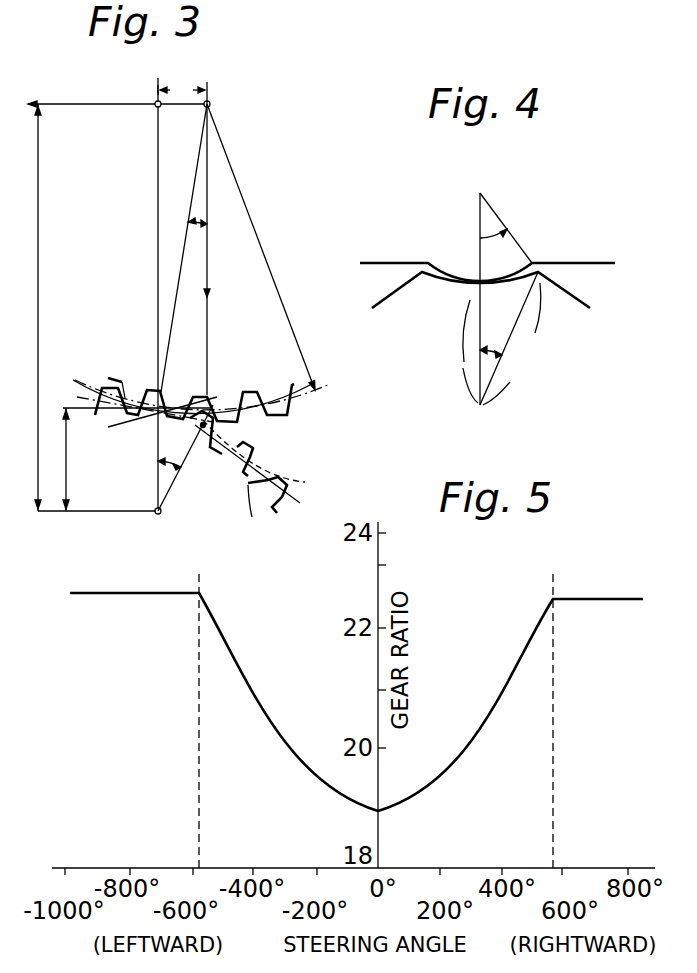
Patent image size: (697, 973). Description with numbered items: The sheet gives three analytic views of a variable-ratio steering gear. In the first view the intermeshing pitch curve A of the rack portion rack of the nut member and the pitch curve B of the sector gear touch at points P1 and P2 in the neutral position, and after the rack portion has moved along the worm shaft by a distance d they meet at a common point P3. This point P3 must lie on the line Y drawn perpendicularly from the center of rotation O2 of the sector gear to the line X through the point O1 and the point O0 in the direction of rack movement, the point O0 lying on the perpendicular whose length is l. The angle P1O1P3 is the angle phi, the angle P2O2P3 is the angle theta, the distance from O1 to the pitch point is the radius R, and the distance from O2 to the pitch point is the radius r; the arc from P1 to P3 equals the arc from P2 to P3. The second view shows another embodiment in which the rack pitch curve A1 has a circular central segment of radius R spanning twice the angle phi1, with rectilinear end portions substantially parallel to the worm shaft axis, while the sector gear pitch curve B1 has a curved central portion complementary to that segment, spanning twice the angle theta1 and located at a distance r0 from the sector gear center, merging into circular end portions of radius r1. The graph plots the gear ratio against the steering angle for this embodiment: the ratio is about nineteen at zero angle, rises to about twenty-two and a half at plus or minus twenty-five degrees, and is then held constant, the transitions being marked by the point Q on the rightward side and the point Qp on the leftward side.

In FIG. 3, the X axis X is at (106, 105).
In FIG. 3, the line YY' Y is at (149, 283).
In FIG. 3, the point Oo O0 is at (145, 118).
In FIG. 3, the point O1 is at (221, 238).
In FIG. 4, the point O1 is at (500, 285).
In FIG. 3, the center of rotation of the sector gear O2 is at (181, 472).
In FIG. 4, the center of rotation of the sector gear O2 is at (486, 403).
In FIG. 3, the distance d is at (181, 90).
In FIG. 3, the length of line YY' l is at (92, 307).
In FIG. 3, the distance O2P r is at (134, 459).
In FIG. 3, the angle P1O1P3 phi is at (184, 248).
In FIG. 3, the radius R is at (261, 247).
In FIG. 4, the radius R is at (478, 277).
In FIG. 3, the pitch curve of the rack portion A is at (330, 388).
In FIG. 3, the contact point on pitch curve A P1 is at (222, 399).
In FIG. 3, the contact point on pitch curve B P2 is at (247, 463).
In FIG. 3, the common contact point P3 is at (147, 420).
In FIG. 3, the angle P2O2P3 theta is at (169, 455).
In FIG. 3, the pitch curve of the sector gear B is at (296, 483).
In FIG. 3, the rack portion of the nut member rack is at (194, 400).
In FIG. 4, the intermeshing pitch curve A1 is at (596, 263).
In FIG. 4, the intermeshing pitch curve B1 is at (588, 308).
In FIG. 4, the half central angle phi1 is at (494, 240).
In FIG. 4, the half central angle theta1 is at (494, 344).
In FIG. 4, the distance ro r0 is at (460, 331).
In FIG. 4, the radius r1 is at (510, 338).
In FIG. 5, the rightward ratio limit point Q is at (569, 709).
In FIG. 5, the leftward ratio limit point Qp is at (207, 709).